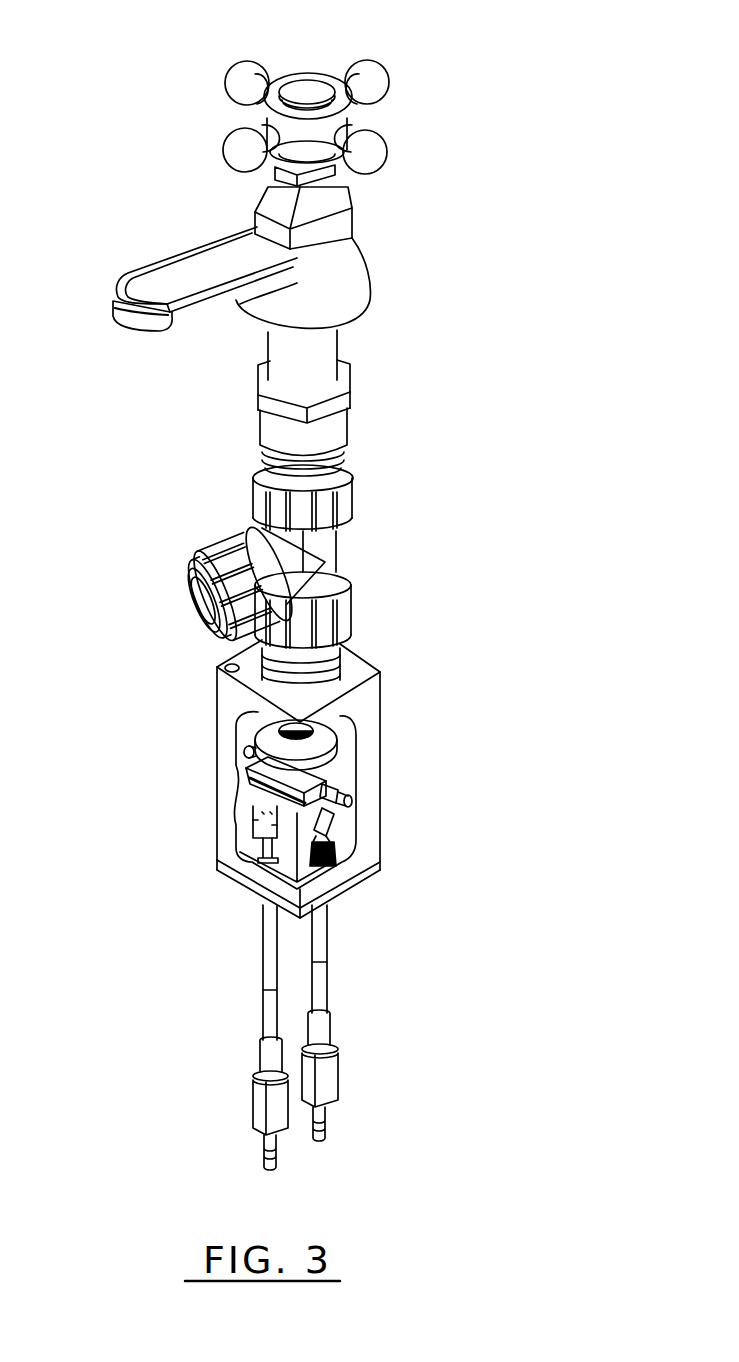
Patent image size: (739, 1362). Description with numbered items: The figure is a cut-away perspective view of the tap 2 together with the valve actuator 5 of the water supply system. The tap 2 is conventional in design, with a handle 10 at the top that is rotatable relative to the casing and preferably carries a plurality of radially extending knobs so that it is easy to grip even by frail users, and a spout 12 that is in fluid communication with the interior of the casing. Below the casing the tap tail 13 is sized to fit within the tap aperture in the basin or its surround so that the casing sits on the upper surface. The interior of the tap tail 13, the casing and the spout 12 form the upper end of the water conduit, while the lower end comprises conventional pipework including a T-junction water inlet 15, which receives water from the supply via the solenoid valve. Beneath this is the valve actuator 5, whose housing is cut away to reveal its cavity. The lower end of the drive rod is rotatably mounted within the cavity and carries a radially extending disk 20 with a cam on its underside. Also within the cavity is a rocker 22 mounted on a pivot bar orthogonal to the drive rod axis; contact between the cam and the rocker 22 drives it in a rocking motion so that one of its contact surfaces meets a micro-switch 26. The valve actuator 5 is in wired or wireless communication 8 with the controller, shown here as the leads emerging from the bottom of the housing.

The tap 2 is at (164, 162).
The handle 10 is at (238, 72).
The spout 12 is at (118, 286).
The tap tail 13 is at (320, 342).
The T-junction water inlet 15 is at (323, 552).
The valve actuator 5 is at (412, 778).
The disk 20 is at (267, 733).
The first micro-switch 26 is at (255, 800).
The rocker 22 is at (335, 783).
The wired or wireless communication 8 is at (268, 1005).